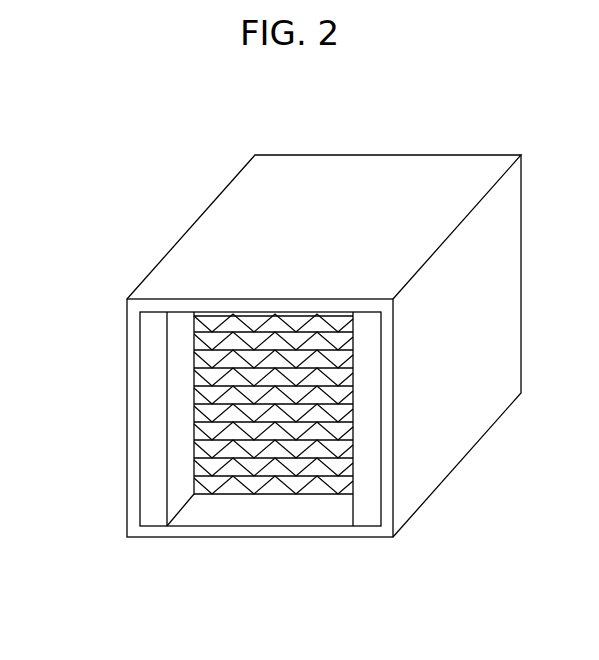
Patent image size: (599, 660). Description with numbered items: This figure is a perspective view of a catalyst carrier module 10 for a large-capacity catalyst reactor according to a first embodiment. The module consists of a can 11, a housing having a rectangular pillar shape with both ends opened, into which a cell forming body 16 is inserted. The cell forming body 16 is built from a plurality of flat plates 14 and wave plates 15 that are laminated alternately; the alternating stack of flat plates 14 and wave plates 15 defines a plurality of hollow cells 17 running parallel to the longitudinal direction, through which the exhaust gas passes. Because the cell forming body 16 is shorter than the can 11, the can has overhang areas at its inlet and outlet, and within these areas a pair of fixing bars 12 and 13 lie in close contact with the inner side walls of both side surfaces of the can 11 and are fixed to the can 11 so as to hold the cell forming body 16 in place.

The catalyst carrier module 10 is at (464, 133).
The can 11 is at (333, 538).
The fixing bar 12 is at (150, 482).
The fixing bar 13 is at (368, 483).
The flat plate 14 is at (228, 351).
The wave plate 15 is at (224, 340).
The cell forming body 16 is at (77, 342).
The hollow cell 17 is at (210, 397).